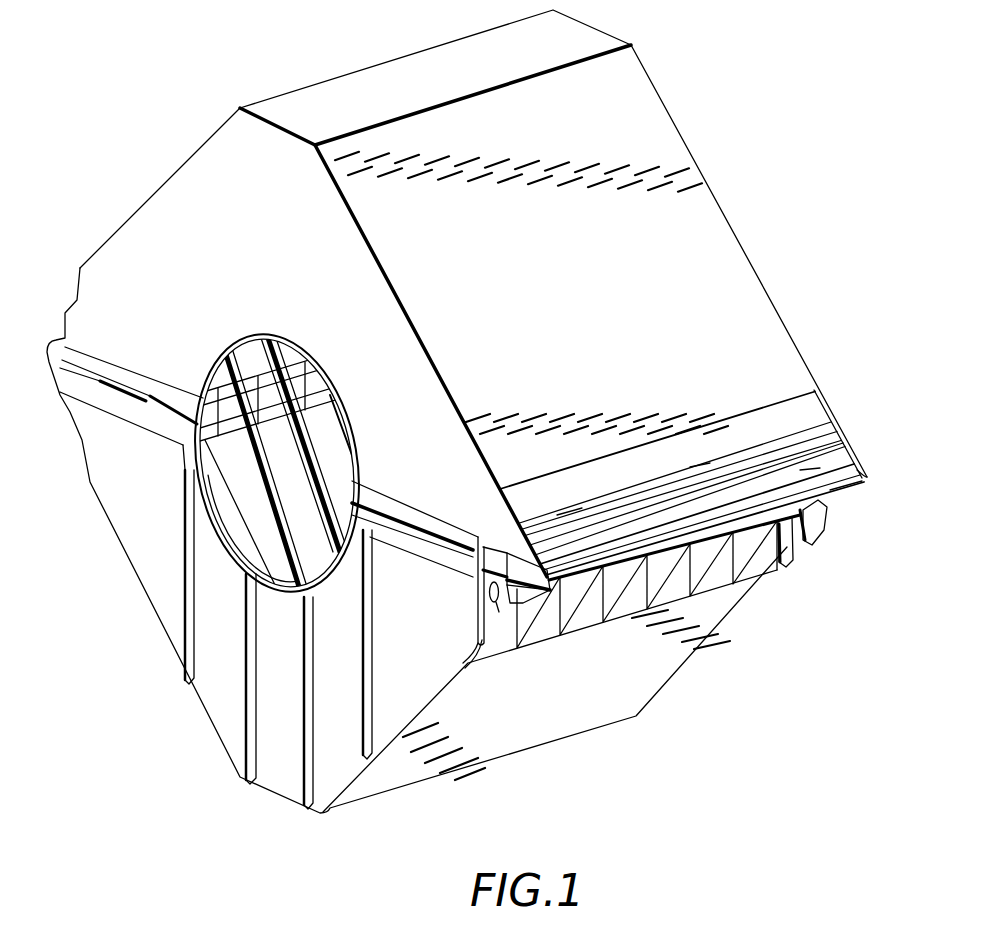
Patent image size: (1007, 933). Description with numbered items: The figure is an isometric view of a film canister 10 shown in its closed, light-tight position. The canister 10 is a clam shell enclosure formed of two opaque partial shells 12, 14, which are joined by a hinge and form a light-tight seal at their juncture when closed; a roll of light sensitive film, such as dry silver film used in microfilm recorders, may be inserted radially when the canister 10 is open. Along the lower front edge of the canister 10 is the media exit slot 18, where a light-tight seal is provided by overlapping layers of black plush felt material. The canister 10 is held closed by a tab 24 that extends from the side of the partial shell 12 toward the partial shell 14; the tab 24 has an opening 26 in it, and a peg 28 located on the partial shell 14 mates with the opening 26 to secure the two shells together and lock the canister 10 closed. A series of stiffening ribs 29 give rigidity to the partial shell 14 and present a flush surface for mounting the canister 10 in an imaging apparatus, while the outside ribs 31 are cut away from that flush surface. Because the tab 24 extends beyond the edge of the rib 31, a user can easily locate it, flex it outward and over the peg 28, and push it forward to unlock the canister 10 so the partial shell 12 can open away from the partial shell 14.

The canister 10 is at (715, 173).
The partial shell 12 is at (322, 80).
The partial shell 14 is at (108, 525).
The media exit slot 18 is at (833, 503).
The tab 24 is at (477, 602).
The opening 26 is at (462, 553).
The peg 28 is at (500, 604).
The stiffening ribs 29 is at (577, 620).
The outside rib 31 is at (477, 655).